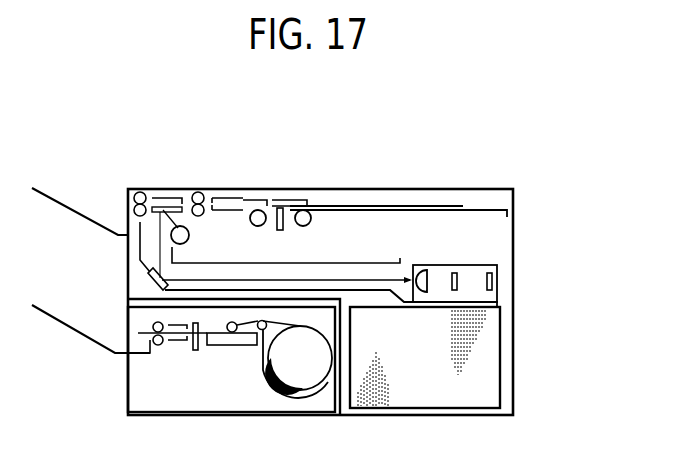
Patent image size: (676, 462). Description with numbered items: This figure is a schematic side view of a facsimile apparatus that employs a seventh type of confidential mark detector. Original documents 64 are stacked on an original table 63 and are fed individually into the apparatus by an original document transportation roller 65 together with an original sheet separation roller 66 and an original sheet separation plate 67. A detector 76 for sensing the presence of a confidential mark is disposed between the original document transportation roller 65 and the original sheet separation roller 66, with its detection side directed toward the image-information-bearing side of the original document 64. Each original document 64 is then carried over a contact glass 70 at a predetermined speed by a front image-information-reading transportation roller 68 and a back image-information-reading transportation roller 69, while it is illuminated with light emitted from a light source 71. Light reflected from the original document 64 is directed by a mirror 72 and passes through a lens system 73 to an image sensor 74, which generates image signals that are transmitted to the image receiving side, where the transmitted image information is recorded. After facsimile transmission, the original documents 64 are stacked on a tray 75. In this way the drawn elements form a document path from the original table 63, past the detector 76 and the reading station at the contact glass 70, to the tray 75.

The original table 63 is at (483, 210).
The original documents 64 is at (395, 206).
The original document transportation roller 65 is at (308, 210).
The original sheet separation roller 66 is at (259, 210).
The original sheet separation plate 67 is at (256, 209).
The front image-information-reading transportation roller 68 is at (198, 191).
The back image-information-reading transportation roller 69 is at (140, 190).
The contact glass 70 is at (166, 207).
The light source 71 is at (175, 236).
The mirror 72 is at (150, 277).
The lens system 73 is at (428, 274).
The image sensor 74 is at (497, 281).
The tray 75 is at (77, 212).
The detector 76 is at (281, 208).